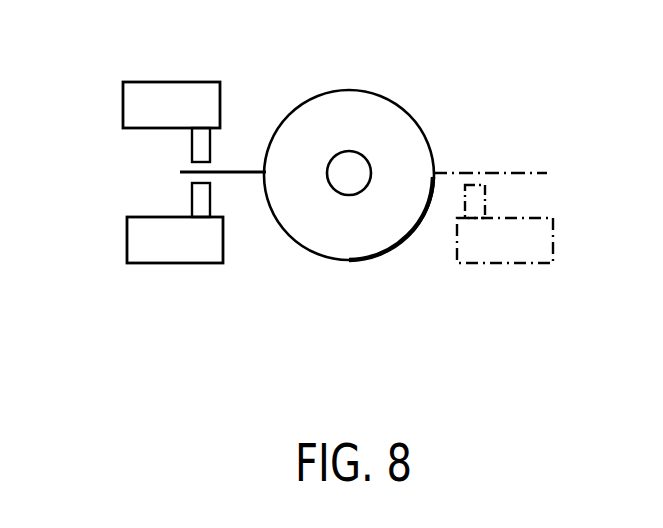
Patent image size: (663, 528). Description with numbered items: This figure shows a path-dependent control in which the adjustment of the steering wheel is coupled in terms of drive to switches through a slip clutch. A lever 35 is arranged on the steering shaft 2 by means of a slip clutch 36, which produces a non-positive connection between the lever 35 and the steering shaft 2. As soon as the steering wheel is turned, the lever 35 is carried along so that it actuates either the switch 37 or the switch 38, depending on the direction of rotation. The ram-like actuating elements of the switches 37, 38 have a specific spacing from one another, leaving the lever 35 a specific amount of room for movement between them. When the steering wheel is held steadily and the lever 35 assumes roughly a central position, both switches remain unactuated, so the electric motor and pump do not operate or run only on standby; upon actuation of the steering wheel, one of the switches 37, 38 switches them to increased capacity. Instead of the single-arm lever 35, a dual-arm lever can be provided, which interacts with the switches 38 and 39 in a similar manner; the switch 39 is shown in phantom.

The steering shaft 2 is at (360, 153).
The lever 35 is at (250, 177).
The slip clutch 36 is at (316, 117).
The switch 37 is at (138, 100).
The switch 38 is at (140, 238).
The switch 39 is at (507, 255).